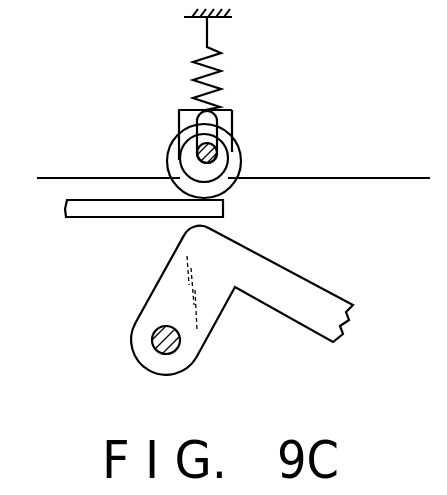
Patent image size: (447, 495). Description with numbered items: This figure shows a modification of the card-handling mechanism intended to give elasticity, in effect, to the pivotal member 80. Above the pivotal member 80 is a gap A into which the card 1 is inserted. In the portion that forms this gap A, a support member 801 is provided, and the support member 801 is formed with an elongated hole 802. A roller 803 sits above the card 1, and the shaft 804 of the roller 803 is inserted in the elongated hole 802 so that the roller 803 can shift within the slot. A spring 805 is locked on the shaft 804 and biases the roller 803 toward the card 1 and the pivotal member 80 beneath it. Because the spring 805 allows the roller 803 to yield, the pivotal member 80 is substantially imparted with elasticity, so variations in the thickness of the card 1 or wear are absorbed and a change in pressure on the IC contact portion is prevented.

The card 1 is at (102, 219).
The pivotal member 80 is at (302, 276).
The support member 801 is at (176, 110).
The elongated hole 802 is at (179, 136).
The roller 803 is at (240, 155).
The shaft 804 is at (168, 152).
The spring 805 is at (218, 77).
The gap A is at (230, 207).